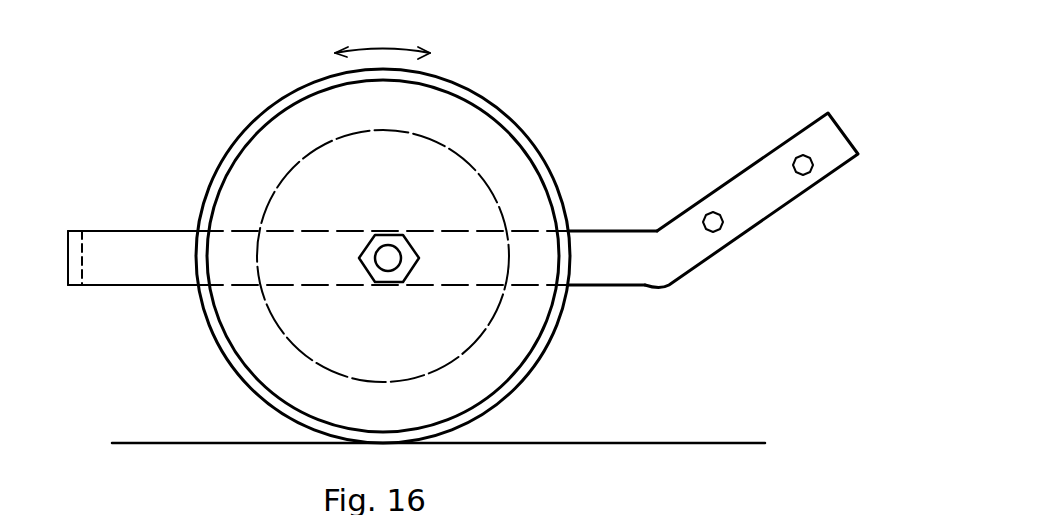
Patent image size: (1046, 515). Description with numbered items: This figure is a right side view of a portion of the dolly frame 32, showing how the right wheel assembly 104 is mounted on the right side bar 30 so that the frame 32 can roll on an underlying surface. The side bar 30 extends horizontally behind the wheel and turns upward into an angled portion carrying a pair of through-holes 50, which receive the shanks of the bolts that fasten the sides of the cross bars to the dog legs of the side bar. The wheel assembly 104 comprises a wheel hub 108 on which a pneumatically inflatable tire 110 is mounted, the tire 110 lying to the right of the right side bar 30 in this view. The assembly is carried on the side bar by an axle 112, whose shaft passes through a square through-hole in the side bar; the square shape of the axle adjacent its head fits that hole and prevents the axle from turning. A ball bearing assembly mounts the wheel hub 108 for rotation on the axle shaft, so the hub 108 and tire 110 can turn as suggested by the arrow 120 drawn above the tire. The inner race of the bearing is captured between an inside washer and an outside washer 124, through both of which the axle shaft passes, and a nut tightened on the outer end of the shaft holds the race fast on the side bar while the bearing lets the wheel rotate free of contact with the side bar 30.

The right side bar 30 is at (625, 287).
The frame 32 is at (628, 230).
The through-holes 50 is at (805, 176).
The right wheel assembly 104 is at (535, 362).
The wheel hub 108 is at (425, 208).
The pneumatically inflatable tire 110 is at (465, 125).
The axle 112 is at (385, 262).
The arrow 120 is at (393, 48).
The outside washer 124 is at (412, 245).